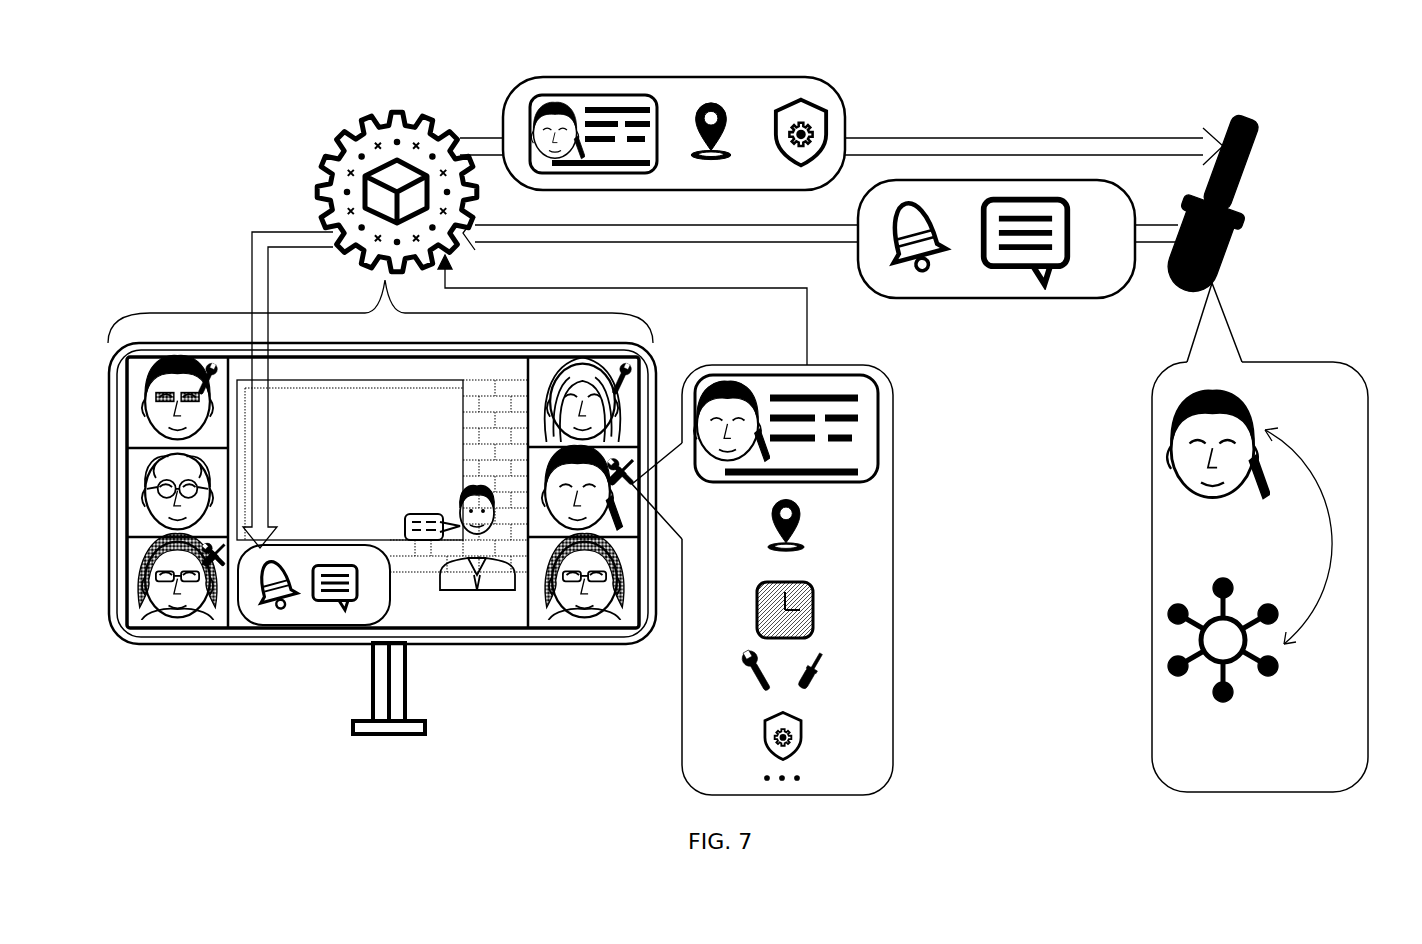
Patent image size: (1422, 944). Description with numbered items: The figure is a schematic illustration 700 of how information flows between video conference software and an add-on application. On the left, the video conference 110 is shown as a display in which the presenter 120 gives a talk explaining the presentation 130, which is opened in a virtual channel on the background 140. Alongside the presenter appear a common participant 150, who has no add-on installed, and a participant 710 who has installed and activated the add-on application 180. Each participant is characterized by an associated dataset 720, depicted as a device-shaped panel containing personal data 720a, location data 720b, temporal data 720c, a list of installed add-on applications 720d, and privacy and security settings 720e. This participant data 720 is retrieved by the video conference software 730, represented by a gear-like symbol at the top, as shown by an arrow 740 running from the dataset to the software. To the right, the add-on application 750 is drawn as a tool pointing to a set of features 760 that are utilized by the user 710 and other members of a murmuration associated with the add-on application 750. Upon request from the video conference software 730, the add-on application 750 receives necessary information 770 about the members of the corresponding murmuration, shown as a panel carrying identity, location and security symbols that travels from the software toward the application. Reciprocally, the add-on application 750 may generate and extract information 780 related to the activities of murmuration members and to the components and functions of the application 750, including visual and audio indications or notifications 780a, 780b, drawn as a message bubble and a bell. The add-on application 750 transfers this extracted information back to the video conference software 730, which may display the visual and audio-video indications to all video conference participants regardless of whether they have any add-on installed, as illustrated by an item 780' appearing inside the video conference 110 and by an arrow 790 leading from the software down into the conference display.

The schematic illustration 700 is at (1400, 137).
The video conference 110 is at (108, 382).
The presenter 120 is at (480, 592).
The presentation 130 is at (345, 390).
The background 140 is at (512, 458).
The common participant 150 is at (593, 625).
The add-on application 180 is at (622, 482).
The participant 710 is at (562, 537).
The dataset 720 is at (893, 390).
The personal data 720a is at (878, 430).
The location data 720b is at (805, 520).
The temporal data 720c is at (815, 605).
The list of installed add-on applications 720d is at (820, 670).
The privacy and security settings 720e is at (805, 725).
The video conference software 730 is at (316, 191).
The arrow 740 is at (805, 305).
The add-on application 750 is at (1252, 178).
The set of features 760 is at (1194, 651).
The information 770 is at (503, 122).
The information 780 is at (996, 289).
The indication 780a is at (1080, 253).
The indication 780b is at (895, 258).
The item 780' is at (314, 632).
The arrow 790 is at (252, 268).